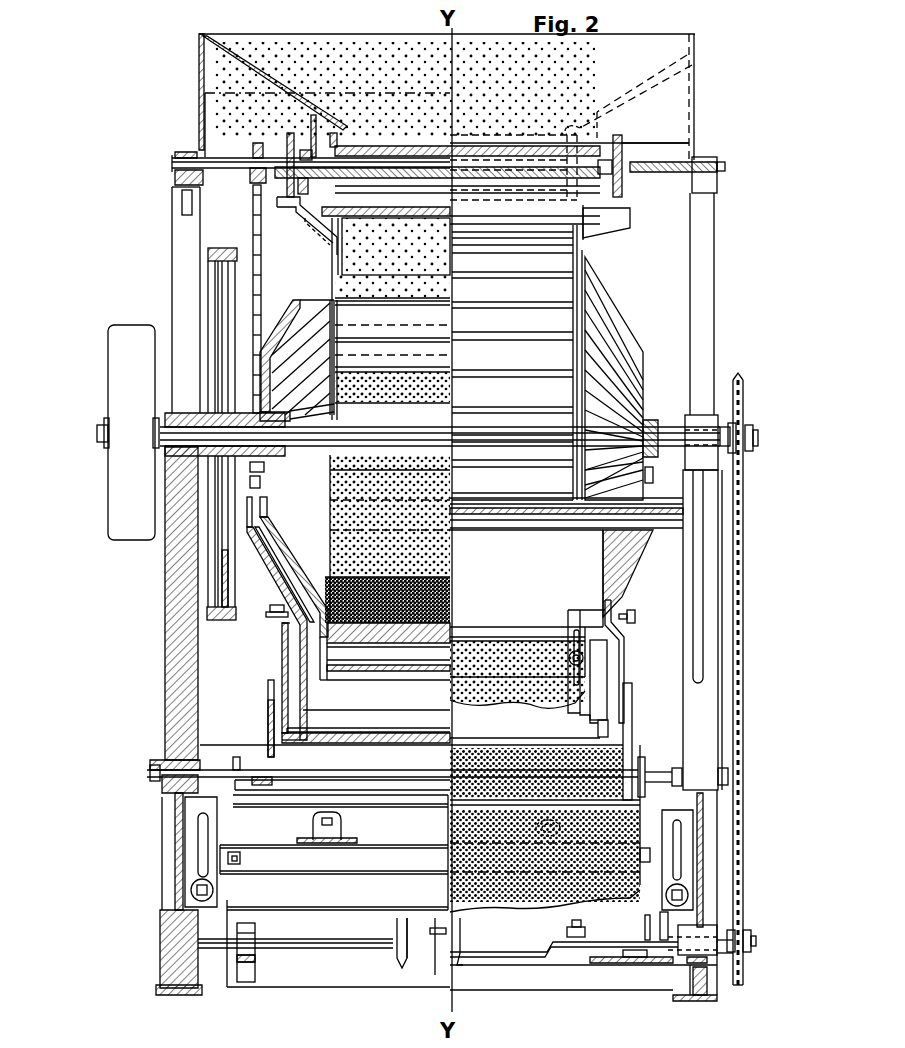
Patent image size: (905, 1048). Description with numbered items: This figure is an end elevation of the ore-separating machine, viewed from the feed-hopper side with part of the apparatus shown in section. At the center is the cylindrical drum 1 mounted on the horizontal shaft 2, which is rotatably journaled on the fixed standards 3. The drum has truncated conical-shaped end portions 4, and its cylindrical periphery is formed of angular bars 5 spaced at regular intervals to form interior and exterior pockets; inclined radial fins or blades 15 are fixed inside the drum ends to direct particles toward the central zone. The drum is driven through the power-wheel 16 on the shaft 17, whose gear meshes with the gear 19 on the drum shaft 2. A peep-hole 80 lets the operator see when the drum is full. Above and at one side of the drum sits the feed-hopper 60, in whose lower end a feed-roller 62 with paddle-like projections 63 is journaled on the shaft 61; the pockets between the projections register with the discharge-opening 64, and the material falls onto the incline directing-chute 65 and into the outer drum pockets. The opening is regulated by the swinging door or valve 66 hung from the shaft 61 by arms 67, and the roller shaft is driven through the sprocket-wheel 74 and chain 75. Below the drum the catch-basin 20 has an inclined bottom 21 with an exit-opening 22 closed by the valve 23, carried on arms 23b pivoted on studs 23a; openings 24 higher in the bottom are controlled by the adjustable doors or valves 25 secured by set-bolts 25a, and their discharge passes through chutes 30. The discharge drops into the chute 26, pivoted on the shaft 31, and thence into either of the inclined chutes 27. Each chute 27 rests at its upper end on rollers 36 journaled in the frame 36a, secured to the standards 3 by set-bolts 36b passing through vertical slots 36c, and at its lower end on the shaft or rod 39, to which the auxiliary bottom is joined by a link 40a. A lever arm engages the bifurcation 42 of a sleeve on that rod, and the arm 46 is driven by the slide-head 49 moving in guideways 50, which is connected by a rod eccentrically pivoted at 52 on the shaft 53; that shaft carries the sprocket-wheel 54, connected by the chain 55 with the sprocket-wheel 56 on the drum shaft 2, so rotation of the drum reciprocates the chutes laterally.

The cylindrical drum 1 is at (387, 420).
The horizontal shaft 2 is at (665, 427).
The fixed standards 3 is at (168, 619).
The truncated conical-shaped end portions 4 is at (451, 378).
The angular bars 5 is at (553, 336).
The inclined radial fins or blades 15 is at (313, 365).
The power-wheel 16 is at (131, 432).
The shaft 17 is at (97, 436).
The gear 19 is at (210, 257).
The catch-basin 20 is at (493, 604).
The inclined bottom 21 is at (432, 630).
The exit-opening 22 is at (365, 732).
The valve 23 is at (350, 740).
The studs 23a is at (268, 630).
The arms 23b is at (283, 657).
The openings 24 is at (480, 638).
The adjustable doors or valves 25 is at (517, 659).
The set-bolts 25a is at (583, 660).
The chute 26 is at (270, 724).
The inclined chutes 27 is at (433, 898).
The chutes 30 is at (525, 707).
The shaft 31 is at (220, 772).
The rollers 36 is at (345, 826).
The frame 36a is at (268, 858).
The set-bolts 36b is at (200, 890).
The vertical slots 36c is at (203, 845).
The shaft or rod 39 is at (318, 948).
The link 40a is at (267, 954).
The bifurcation 42 is at (403, 955).
The arm 46 is at (598, 945).
The slide-head 49 is at (646, 964).
The guideways 50 is at (690, 953).
The eccentric pivot 52 is at (646, 920).
The shaft 53 is at (750, 941).
The sprocket-wheel 54 is at (744, 966).
The chain 55 is at (745, 506).
The sprocket-wheel 56 is at (745, 396).
The feed-hopper 60 is at (481, 73).
The shaft 61 is at (220, 158).
The feed-roller 62 is at (350, 153).
The paddle-like projections 63 is at (497, 160).
The discharge-opening 64 is at (455, 208).
The incline directing-chute 65 is at (410, 243).
The swinging door or valve 66 is at (310, 214).
The arms 67 is at (288, 190).
The sprocket-wheel 74 is at (258, 142).
The chain 75 is at (252, 244).
The peep-hole 80 is at (650, 478).